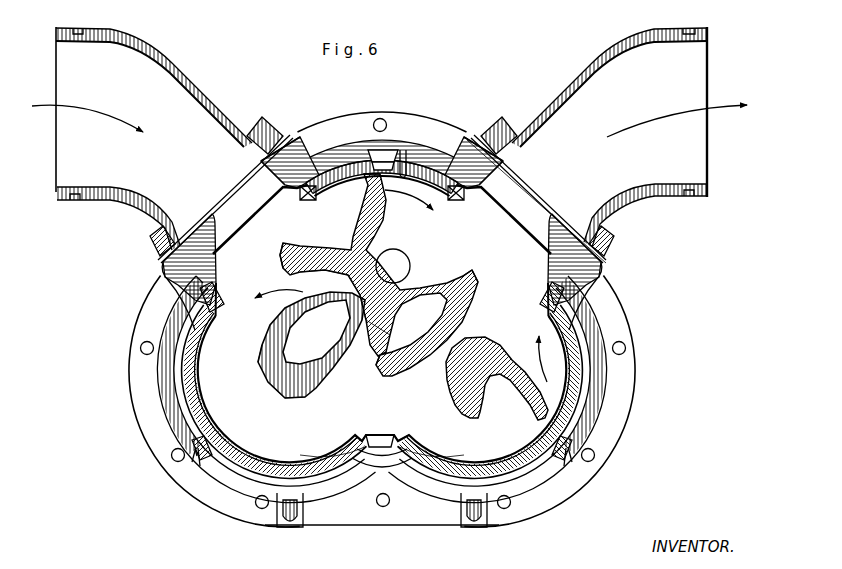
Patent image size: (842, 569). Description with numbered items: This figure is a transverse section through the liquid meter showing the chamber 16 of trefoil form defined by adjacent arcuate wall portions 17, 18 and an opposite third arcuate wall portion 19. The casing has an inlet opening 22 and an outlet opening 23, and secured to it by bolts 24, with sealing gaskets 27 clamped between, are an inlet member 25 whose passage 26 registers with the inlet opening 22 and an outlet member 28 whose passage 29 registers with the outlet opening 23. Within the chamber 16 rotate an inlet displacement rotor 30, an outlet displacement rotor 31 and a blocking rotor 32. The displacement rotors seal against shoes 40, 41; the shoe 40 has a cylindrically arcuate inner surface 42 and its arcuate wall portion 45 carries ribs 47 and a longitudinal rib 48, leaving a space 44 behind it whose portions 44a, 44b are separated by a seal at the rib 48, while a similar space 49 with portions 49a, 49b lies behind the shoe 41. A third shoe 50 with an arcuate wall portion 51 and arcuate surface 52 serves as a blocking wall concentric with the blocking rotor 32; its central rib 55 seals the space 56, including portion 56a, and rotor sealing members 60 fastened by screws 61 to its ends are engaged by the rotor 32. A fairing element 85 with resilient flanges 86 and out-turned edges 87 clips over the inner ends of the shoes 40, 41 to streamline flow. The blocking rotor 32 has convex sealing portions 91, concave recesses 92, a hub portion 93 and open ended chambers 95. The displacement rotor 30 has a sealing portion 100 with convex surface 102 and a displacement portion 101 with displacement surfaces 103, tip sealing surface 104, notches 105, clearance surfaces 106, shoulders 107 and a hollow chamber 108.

The chamber 16 is at (330, 443).
The arcuate wall portion 17 is at (157, 380).
The arcuate wall portion 18 is at (610, 388).
The third arcuate wall portion 19 is at (432, 150).
The inlet opening 22 is at (209, 258).
The outlet opening 23 is at (548, 252).
The bolts 24 is at (150, 241).
The inlet member 25 is at (128, 206).
The passage 26 is at (82, 186).
The sealing gaskets 27 is at (162, 266).
The outlet member 28 is at (650, 200).
The passage 29 is at (672, 184).
The inlet displacement rotor 30 is at (350, 357).
The outlet displacement rotor 31 is at (466, 400).
The blocking rotor 32 is at (376, 235).
The shoe 40 is at (257, 474).
The shoe 41 is at (457, 447).
The inner surface 42 is at (202, 316).
The space 44 is at (167, 363).
The portion of the space 44a is at (166, 330).
The portion of the space 44b is at (308, 478).
The cylindrically arcuate wall portion 45 is at (190, 400).
The ribs 47 is at (196, 448).
The longitudinally extending rib 48 is at (200, 463).
The space 49 is at (578, 345).
The portion of the space 49a is at (600, 418).
The portion of the space 49b is at (420, 480).
The third shoe 50 is at (352, 165).
The arcuate wall portion 51 is at (410, 162).
The cylindrically arcuate surface 52 is at (402, 160).
The central longitudinal rib 55 is at (386, 150).
The space 56 is at (323, 152).
The portion of the space 56a is at (318, 160).
The rotor sealing member 60 is at (283, 195).
The screws 61 is at (462, 202).
The fairing element 85 is at (383, 435).
The resilient flanges 86 is at (373, 432).
The out-turned edges 87 is at (390, 455).
The sealing portions 91 is at (286, 256).
The concave arcuate portions 92 is at (392, 343).
The hub portion 93 is at (400, 262).
The open ended chambers 95 is at (358, 216).
The sealing portion 100 is at (274, 392).
The displacement portion 101 is at (316, 298).
The cylindrically arcuate convex surface 102 is at (303, 400).
The displacement surfaces 103 is at (333, 300).
The convex sealing surface 104 is at (368, 302).
The notch 105 is at (350, 252).
The clearance surface 106 is at (290, 337).
The shoulders 107 is at (270, 345).
The chamber 108 is at (311, 345).